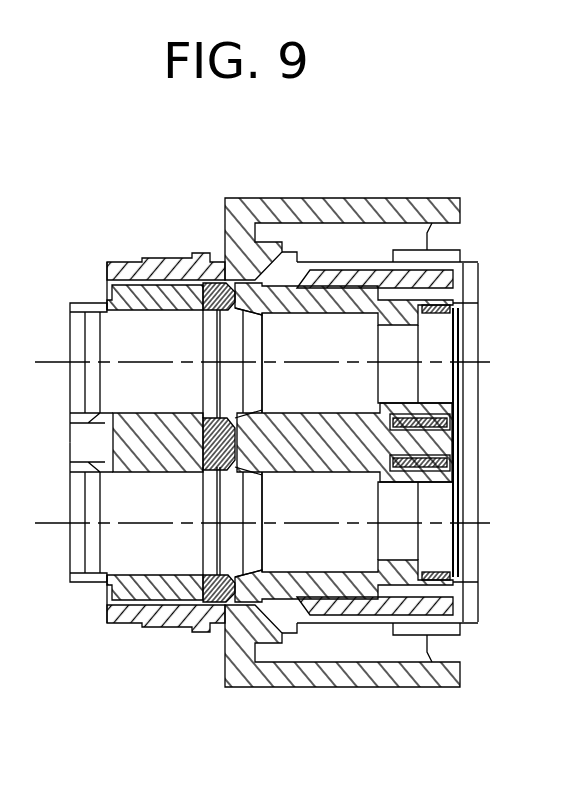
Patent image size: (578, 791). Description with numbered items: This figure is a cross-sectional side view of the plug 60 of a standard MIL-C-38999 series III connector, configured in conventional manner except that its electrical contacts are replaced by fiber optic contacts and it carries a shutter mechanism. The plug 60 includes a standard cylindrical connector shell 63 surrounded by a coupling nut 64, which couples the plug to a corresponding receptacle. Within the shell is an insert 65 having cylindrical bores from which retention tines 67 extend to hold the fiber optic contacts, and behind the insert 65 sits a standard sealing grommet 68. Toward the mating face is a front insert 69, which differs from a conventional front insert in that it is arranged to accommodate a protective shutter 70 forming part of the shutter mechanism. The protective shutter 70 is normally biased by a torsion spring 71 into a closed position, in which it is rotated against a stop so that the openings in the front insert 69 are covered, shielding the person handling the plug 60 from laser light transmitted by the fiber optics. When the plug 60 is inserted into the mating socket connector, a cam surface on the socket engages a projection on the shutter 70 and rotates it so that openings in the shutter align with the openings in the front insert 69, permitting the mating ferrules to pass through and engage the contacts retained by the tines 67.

The plug 60 is at (441, 168).
The connector shell 63 is at (503, 407).
The coupling nut 64 is at (323, 199).
The insert 65 is at (208, 613).
The retention tines 67 is at (255, 600).
The sealing grommet 68 is at (140, 298).
The front insert 69 is at (428, 581).
The protective shutter 70 is at (458, 335).
The torsion spring 71 is at (442, 469).